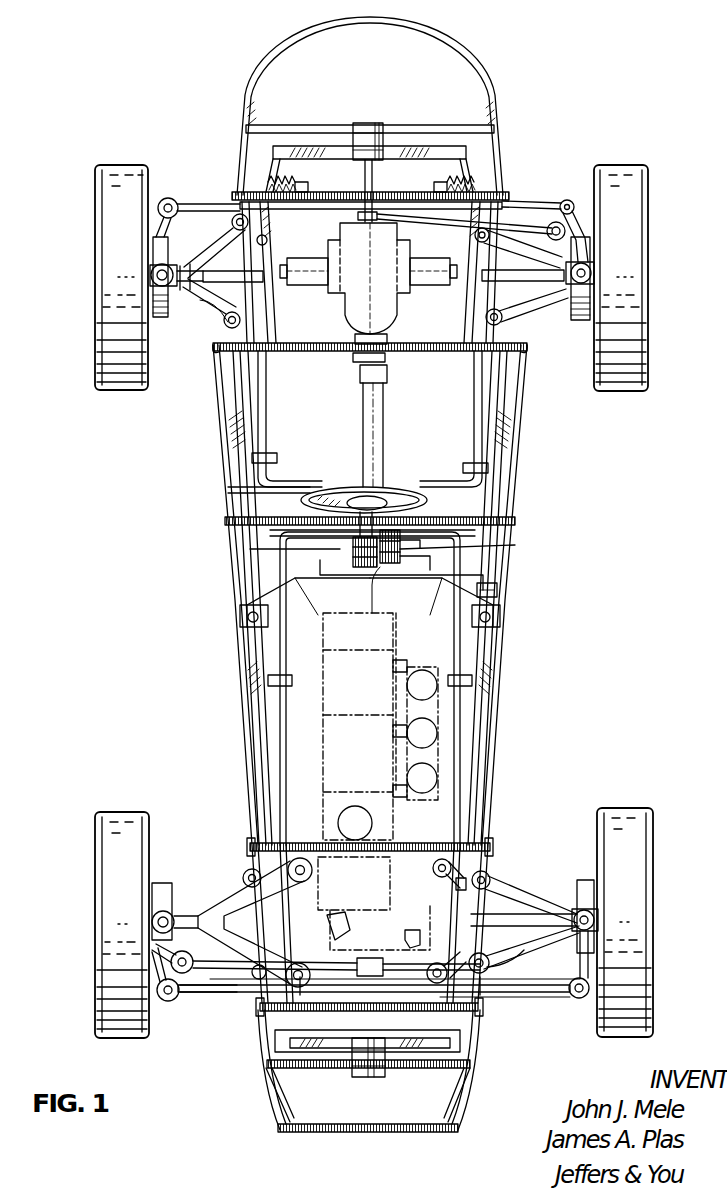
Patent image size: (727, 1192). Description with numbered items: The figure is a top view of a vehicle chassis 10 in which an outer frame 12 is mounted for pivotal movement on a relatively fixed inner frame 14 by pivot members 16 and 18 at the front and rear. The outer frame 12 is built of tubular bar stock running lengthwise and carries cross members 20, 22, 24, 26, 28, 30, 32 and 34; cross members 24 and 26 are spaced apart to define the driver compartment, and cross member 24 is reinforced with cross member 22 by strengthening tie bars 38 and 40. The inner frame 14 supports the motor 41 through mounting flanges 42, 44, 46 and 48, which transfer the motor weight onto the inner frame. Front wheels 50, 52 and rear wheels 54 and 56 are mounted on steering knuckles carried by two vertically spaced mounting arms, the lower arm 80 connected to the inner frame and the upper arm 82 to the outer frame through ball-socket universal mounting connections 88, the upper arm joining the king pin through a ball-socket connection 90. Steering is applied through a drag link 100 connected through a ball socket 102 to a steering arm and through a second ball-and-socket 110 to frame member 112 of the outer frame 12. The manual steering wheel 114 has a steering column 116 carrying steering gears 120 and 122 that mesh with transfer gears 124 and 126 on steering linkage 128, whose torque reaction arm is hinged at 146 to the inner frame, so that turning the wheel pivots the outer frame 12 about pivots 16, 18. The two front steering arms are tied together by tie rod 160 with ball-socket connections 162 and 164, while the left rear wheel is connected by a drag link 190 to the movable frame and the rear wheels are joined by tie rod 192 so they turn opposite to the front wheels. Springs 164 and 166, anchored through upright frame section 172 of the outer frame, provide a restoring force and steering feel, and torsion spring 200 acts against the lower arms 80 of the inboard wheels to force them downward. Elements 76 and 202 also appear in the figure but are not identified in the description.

The chassis 10 is at (502, 97).
The outer frame 12 is at (278, 50).
The inner frame 14 is at (287, 1047).
The pivot member 16 is at (372, 1077).
The pivot member 18 is at (386, 124).
The cross member 20 is at (295, 125).
The cross member 22 is at (252, 190).
The cross member 24 is at (522, 355).
The cross member 26 is at (240, 528).
The cross member 28 is at (256, 832).
The cross member 30 is at (280, 1012).
The cross member 32 is at (470, 1062).
The cross member 34 is at (372, 1132).
The strengthening tie bar 38 is at (227, 305).
The strengthening tie bar 40 is at (515, 325).
The motor 41 is at (330, 706).
The mounting flange 42 is at (250, 628).
The mounting flange 44 is at (500, 598).
The mounting flange 46 is at (480, 840).
The mounting flange 48 is at (250, 865).
The front wheel 50 is at (645, 892).
The front wheel 52 is at (100, 906).
The rear wheel 54 is at (655, 300).
The rear wheel 56 is at (100, 292).
The rear wheel spindle 76 is at (585, 905).
The lower mounting arm 80 is at (240, 898).
The upper mounting arm 82 is at (490, 955).
The ball-socket universal mounting connection 88 is at (490, 888).
The ball-socket connection 90 is at (170, 910).
The drag link 100 is at (237, 997).
The ball socket 102 is at (162, 985).
The ball-and-socket 110 is at (365, 216).
The frame member 112 is at (360, 985).
The steering wheel 114 is at (418, 487).
The steering column 116 is at (305, 595).
The steering gear 120 is at (340, 570).
The steering gear 122 is at (390, 600).
The transfer gear 124 is at (480, 547).
The transfer gear 126 is at (392, 570).
The steering linkage 128 is at (482, 576).
The hinged connection 146 is at (500, 600).
The tie rod 160 is at (505, 995).
The ball-socket connection 162 is at (172, 978).
The spring 164 is at (270, 180).
The spring 166 is at (470, 177).
The upright frame section 172 is at (356, 191).
The drag link 190 is at (560, 200).
The tie rod 192 is at (525, 206).
The torsion spring 200 is at (270, 446).
The rod 202 is at (238, 495).